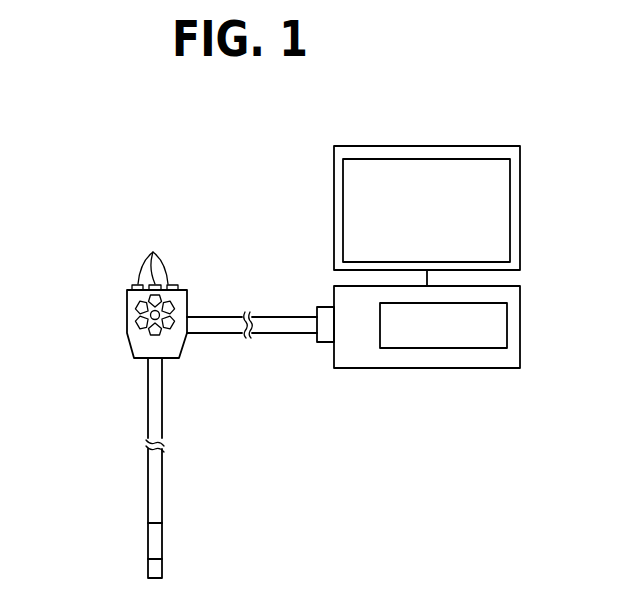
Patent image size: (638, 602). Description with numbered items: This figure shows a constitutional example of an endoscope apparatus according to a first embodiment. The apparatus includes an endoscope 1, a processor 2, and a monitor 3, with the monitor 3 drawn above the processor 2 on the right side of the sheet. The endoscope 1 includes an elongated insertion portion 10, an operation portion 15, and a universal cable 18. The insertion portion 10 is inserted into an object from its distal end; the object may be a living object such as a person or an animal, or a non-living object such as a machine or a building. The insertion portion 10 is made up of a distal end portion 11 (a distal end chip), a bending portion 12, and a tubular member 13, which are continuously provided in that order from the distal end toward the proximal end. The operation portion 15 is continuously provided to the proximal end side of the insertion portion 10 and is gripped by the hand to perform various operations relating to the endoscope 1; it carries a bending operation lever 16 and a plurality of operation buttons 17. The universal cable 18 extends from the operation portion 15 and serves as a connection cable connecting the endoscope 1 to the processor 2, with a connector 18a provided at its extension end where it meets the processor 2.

The endoscope 1 is at (100, 302).
The processor 2 is at (520, 330).
The monitor 3 is at (520, 198).
The insertion portion 10 is at (80, 428).
The distal end portion 11 is at (147, 566).
The bending portion 12 is at (147, 530).
The tubular member 13 is at (147, 422).
The operation portion 15 is at (130, 312).
The bending operation lever 16 is at (173, 312).
The operation buttons 17 is at (155, 257).
The universal cable 18 is at (258, 334).
The connector 18a is at (323, 343).